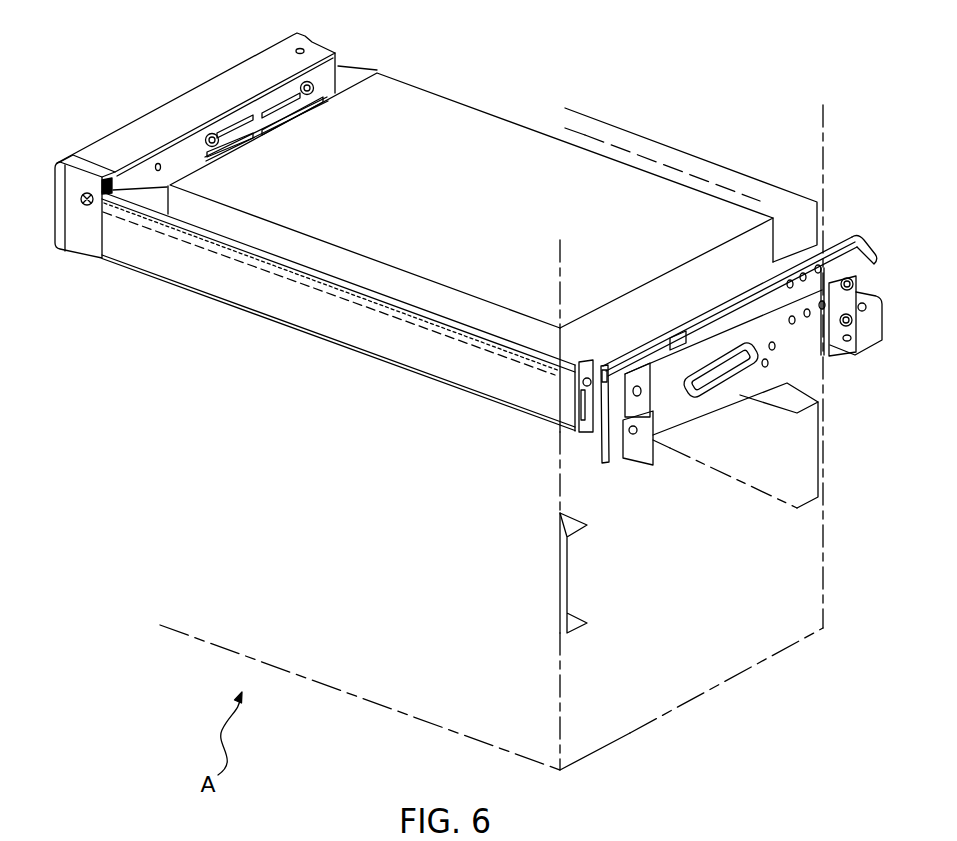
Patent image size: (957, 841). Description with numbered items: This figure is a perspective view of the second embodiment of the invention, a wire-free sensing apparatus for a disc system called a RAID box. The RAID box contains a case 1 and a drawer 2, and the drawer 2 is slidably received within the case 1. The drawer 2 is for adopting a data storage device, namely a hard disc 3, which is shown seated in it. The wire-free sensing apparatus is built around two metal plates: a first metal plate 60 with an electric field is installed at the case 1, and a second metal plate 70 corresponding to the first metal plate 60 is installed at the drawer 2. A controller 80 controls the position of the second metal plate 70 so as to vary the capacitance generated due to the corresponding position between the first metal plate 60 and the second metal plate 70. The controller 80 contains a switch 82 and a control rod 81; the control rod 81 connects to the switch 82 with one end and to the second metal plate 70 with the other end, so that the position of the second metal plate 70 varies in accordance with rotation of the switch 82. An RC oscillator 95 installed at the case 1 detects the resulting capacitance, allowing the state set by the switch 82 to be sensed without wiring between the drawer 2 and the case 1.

The case 1 is at (832, 360).
The drawer 2 is at (208, 104).
The hard disc 3 is at (498, 137).
The first metal plate 60 is at (607, 365).
The second metal plate 70 is at (588, 362).
The controller 80 is at (314, 311).
The control rod 81 is at (189, 236).
The switch 82 is at (84, 205).
The RC oscillator 95 is at (673, 335).